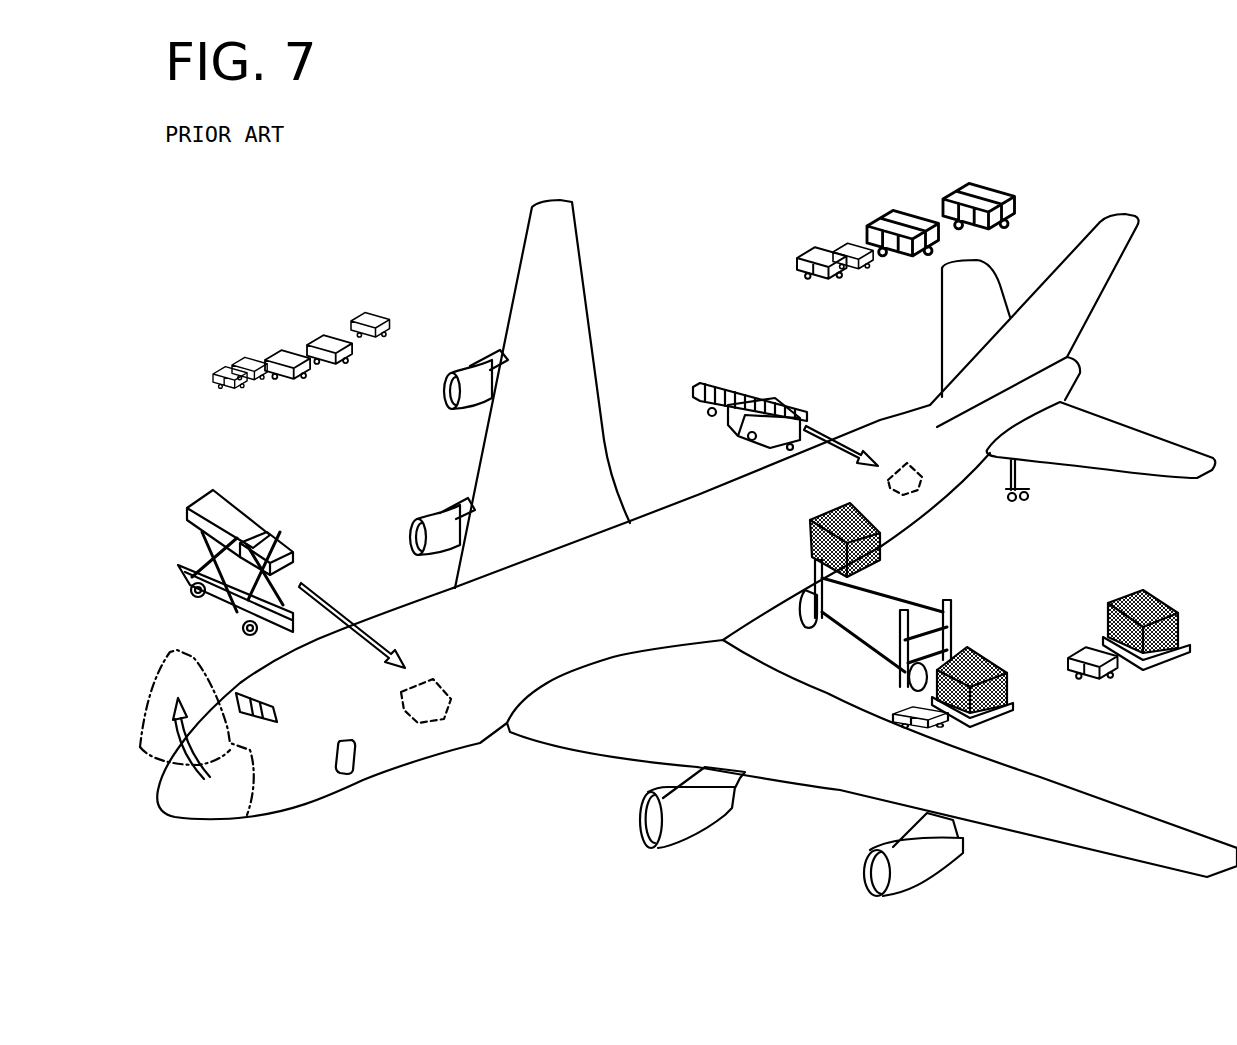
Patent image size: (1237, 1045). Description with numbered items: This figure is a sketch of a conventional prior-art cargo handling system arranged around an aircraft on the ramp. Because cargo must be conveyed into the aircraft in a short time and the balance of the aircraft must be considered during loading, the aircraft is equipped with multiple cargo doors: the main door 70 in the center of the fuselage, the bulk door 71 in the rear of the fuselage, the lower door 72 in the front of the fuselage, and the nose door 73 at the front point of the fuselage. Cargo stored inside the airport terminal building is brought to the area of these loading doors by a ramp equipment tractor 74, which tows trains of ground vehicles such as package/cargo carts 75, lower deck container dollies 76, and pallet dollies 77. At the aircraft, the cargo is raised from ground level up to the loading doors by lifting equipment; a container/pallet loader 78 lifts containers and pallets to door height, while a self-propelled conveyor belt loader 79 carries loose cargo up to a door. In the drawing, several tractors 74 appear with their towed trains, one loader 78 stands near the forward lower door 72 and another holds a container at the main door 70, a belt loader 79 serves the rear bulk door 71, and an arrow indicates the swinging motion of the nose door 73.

The main door 70 is at (807, 517).
The bulk door 71 is at (917, 487).
The lower door 72 is at (442, 712).
The nose door 73 is at (207, 820).
The ramp equipment tractor 74 is at (227, 377).
The package/cargo carts 75 is at (1017, 203).
The lower deck container dollies 76 is at (382, 323).
The pallet dollies 77 is at (1170, 660).
The container/pallet loaders 78 is at (185, 560).
The self-propelled conveyor belt loaders 79 is at (777, 407).